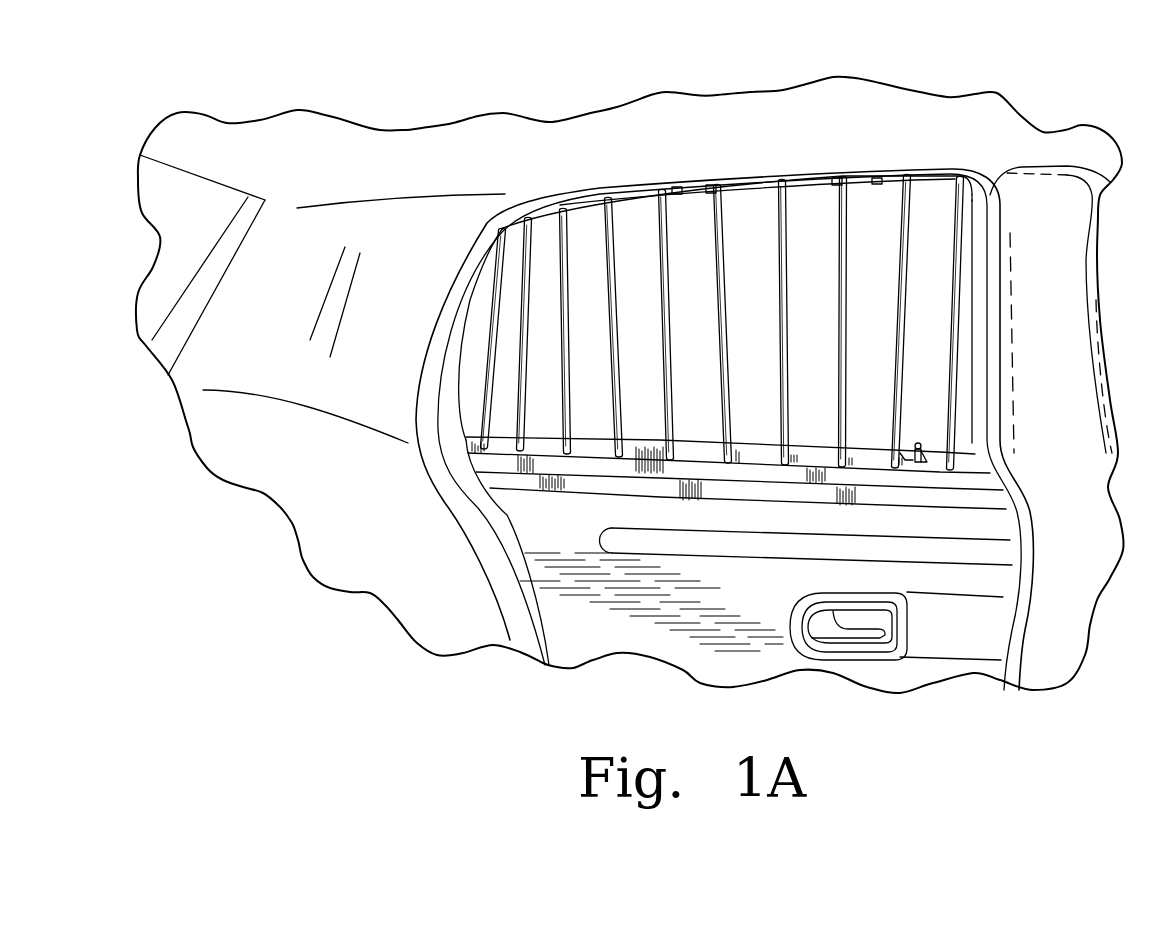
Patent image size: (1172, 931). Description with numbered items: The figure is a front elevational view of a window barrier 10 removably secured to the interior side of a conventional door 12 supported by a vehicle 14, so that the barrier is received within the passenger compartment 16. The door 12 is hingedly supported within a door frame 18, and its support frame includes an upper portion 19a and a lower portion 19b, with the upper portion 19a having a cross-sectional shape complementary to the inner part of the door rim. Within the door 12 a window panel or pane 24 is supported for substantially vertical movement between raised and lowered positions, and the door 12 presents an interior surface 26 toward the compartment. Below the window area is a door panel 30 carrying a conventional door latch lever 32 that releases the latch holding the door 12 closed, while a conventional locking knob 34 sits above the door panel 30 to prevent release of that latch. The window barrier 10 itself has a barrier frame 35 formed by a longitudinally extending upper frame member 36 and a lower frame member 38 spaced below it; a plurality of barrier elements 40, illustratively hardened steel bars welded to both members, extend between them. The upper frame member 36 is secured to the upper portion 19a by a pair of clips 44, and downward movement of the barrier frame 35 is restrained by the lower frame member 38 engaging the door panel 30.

The window barrier 10 is at (882, 155).
The door 12 is at (573, 650).
The vehicle 14 is at (1092, 102).
The passenger compartment 16 is at (414, 596).
The door frame 18 is at (570, 194).
The upper portion of support frame 19a is at (481, 287).
The lower portion of support frame 19b is at (506, 513).
The window panel or pane 24 is at (766, 309).
The interior surface 26 is at (736, 595).
The door panel 30 is at (617, 650).
The door latch lever 32 is at (862, 633).
The locking knob 34 is at (919, 441).
The barrier frame 35 is at (642, 180).
The upper frame member 36 is at (582, 204).
The lower frame member 38 is at (584, 470).
The barrier elements 40 is at (727, 201).
The clips 44 is at (686, 194).